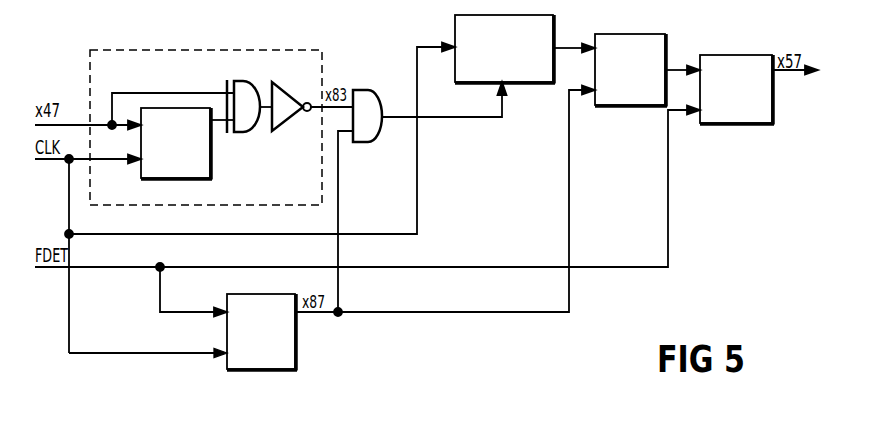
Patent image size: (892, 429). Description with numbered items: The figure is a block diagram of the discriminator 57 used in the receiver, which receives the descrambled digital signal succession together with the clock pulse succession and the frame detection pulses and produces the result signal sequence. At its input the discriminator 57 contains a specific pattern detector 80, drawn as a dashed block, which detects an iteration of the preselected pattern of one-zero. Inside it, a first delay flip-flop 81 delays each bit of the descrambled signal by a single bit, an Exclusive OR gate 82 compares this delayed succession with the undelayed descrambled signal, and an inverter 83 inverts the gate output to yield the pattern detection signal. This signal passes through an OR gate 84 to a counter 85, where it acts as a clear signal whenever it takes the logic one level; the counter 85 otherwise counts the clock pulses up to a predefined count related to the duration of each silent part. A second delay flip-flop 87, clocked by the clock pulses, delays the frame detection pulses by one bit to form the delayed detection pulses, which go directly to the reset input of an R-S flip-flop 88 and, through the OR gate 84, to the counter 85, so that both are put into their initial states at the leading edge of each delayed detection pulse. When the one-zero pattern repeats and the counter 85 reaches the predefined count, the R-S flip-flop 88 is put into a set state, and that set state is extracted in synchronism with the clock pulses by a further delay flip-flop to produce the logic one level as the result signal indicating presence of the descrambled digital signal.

The discriminator 57 is at (165, 370).
The specific pattern detector 80 is at (283, 47).
The first delay flip-flop 81 is at (210, 165).
The Exclusive OR gate 82 is at (239, 81).
The inverter 83 is at (279, 89).
The OR gate 84 is at (373, 88).
The counter 85 is at (556, 30).
The second delay flip-flop 87 is at (742, 55).
The R-S flip-flop 88 is at (633, 34).